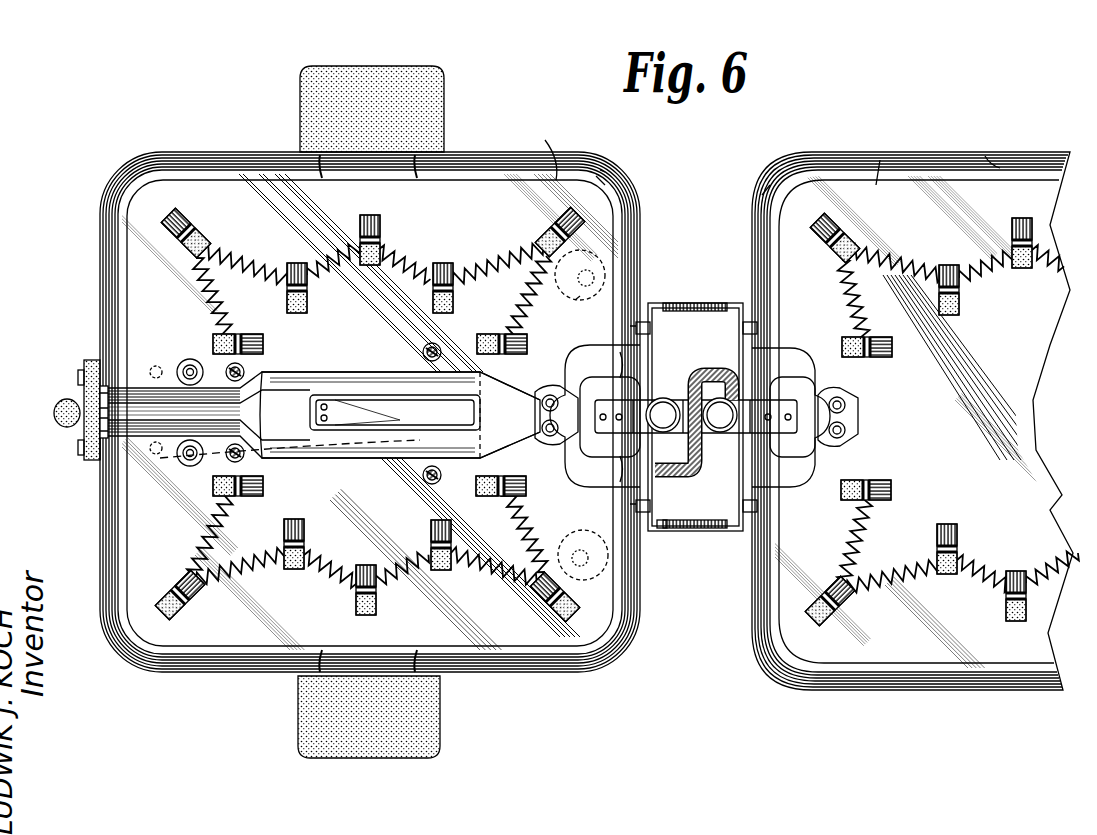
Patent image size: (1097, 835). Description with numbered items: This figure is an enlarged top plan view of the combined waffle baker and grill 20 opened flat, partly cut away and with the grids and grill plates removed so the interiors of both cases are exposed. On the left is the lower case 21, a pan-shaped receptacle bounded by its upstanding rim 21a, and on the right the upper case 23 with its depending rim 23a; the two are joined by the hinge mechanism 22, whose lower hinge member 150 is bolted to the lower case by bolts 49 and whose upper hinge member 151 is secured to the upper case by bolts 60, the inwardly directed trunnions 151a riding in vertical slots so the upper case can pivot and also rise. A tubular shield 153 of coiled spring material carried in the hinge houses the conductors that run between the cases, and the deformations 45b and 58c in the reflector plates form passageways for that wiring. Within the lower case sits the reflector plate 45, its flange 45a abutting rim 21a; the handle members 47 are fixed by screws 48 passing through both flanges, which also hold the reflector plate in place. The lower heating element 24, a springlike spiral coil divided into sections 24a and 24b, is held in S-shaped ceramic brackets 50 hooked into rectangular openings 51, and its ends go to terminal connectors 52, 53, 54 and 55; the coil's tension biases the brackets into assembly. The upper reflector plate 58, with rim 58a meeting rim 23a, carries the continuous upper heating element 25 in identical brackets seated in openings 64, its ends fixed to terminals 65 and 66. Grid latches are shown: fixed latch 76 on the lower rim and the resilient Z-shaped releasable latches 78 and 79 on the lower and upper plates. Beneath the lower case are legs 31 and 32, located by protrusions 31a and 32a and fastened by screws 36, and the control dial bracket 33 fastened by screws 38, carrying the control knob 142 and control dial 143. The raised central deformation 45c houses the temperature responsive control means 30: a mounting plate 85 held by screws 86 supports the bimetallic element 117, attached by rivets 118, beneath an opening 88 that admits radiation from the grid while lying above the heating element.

The combined waffle baker and grill 20 is at (692, 617).
The lower case 21 is at (590, 158).
The upstanding peripheral wall portion or rim 21a is at (628, 180).
The hinge mechanism 22 is at (706, 530).
The upper case 23 is at (838, 160).
The depending peripheral flange or rim portion 23a is at (765, 180).
The lower heating element 24 is at (311, 483).
The heating element section 24a is at (415, 589).
The heating element section 24b is at (395, 273).
The upper heating element 25 is at (995, 580).
The temperature responsive control means 30 is at (400, 430).
The leg 31 is at (588, 306).
The protrusions 31a is at (565, 290).
The leg 32 is at (602, 540).
The protrusions 32a is at (565, 548).
The control dial bracket 33 is at (90, 360).
The screws 36 is at (585, 252).
The screws or fastening means 38 is at (154, 366).
The reflector plate 45 is at (558, 158).
The upwardly extending peripheral flange 45a is at (625, 228).
The deformation 45b is at (625, 352).
The large central deformation 45c is at (130, 418).
The handle members 47 is at (445, 100).
The screws or fastening means 48 is at (325, 165).
The bolts 49 is at (650, 322).
The S-shaped ceramic brackets 50 is at (623, 398).
The rectangular openings 51 is at (369, 409).
The terminal connector 52 is at (556, 428).
The terminal connector 53 is at (560, 385).
The terminal connector 54 is at (182, 462).
The terminal connector 55 is at (180, 362).
The reflector plate 58 is at (882, 172).
The peripheral rim 58a is at (1000, 162).
The deformations 58c is at (775, 360).
The bolts 60 is at (757, 328).
The rectangular openings 64 is at (924, 417).
The terminal 65 is at (846, 430).
The terminal 66 is at (848, 398).
The fixed latch 76 is at (100, 420).
The movable and releasable latch member 78 is at (665, 402).
The movable and releasable latch member 79 is at (728, 396).
The mounting plate 85 is at (380, 488).
The screws 86 is at (244, 370).
The enlarged opening 88 is at (482, 415).
The bimetallic element 117 is at (408, 410).
The rivets 118 is at (330, 405).
The control knob 142 is at (58, 406).
The control dial 143 is at (78, 377).
The lower hinge member 150 is at (675, 311).
The upper hinge member 151 is at (700, 532).
The trunnions 151a is at (700, 520).
The tubular shield 153 is at (710, 448).